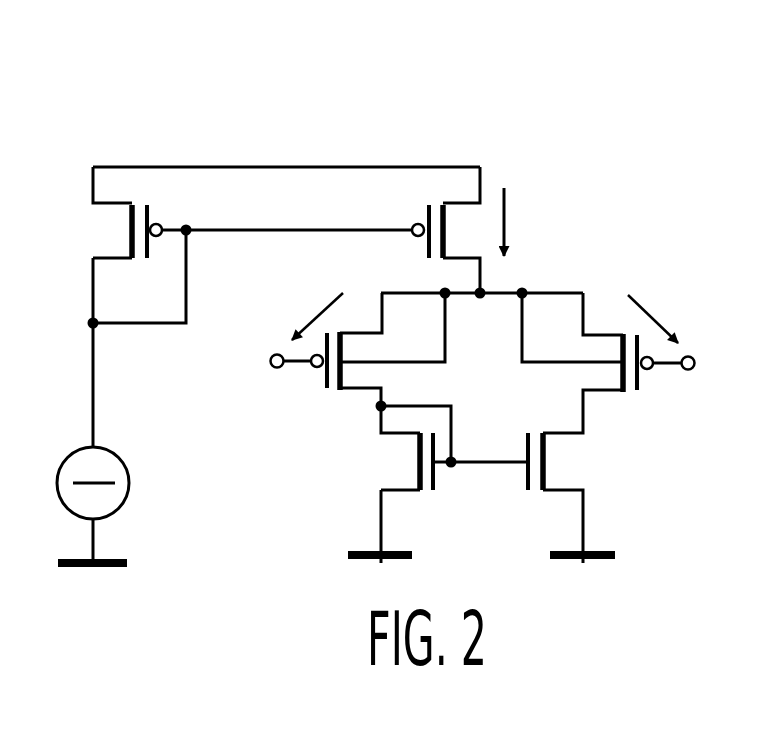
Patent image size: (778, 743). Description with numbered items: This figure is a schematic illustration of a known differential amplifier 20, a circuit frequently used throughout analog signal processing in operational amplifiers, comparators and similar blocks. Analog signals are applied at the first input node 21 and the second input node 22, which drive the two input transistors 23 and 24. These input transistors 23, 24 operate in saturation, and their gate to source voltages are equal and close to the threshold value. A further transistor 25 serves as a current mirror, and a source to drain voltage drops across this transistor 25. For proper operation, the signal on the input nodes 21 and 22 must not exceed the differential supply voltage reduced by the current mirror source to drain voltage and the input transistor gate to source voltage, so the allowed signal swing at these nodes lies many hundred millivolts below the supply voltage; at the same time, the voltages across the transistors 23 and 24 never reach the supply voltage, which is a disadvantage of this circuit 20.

The differential amplifier 20 is at (557, 112).
The node VIN1 21 is at (296, 367).
The node VIN2 22 is at (681, 370).
The input transistor 23 is at (311, 380).
The input transistor 24 is at (655, 390).
The transistor serving as current mirror 25 is at (414, 218).